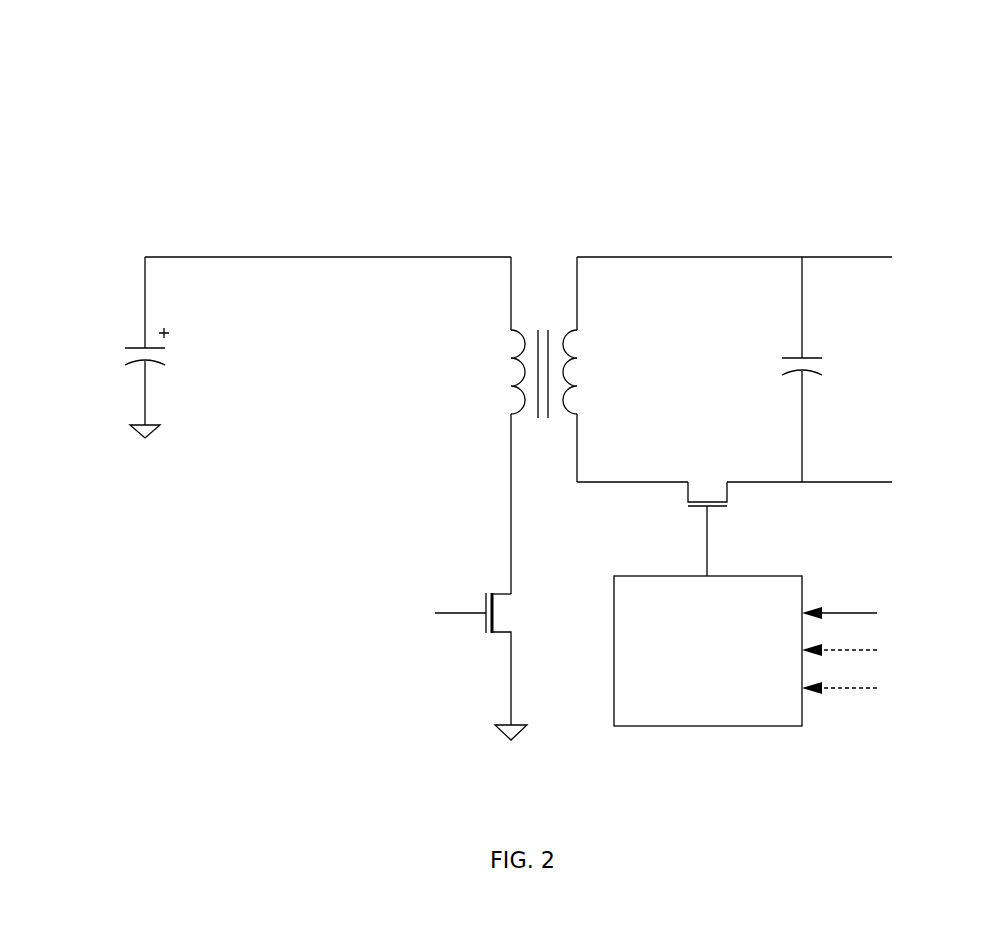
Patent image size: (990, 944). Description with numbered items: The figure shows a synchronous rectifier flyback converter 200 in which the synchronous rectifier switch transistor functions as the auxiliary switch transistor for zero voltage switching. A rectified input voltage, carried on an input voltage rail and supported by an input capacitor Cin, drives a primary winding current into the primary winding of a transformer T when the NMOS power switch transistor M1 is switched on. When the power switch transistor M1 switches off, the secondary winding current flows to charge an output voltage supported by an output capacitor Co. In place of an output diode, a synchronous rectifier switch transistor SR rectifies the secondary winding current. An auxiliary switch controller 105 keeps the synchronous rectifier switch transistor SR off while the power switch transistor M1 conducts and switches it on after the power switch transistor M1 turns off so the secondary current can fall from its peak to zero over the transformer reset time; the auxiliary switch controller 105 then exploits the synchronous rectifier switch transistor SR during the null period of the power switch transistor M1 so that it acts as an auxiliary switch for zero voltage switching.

The synchronous rectifier flyback converter 200 is at (488, 90).
The auxiliary switch controller 105 is at (748, 726).
The input capacitor Cin is at (124, 347).
The output capacitor Co is at (821, 369).
The transformer T is at (544, 361).
The synchronous rectifier switch transistor SR is at (707, 514).
The power switch transistor M1 is at (491, 666).